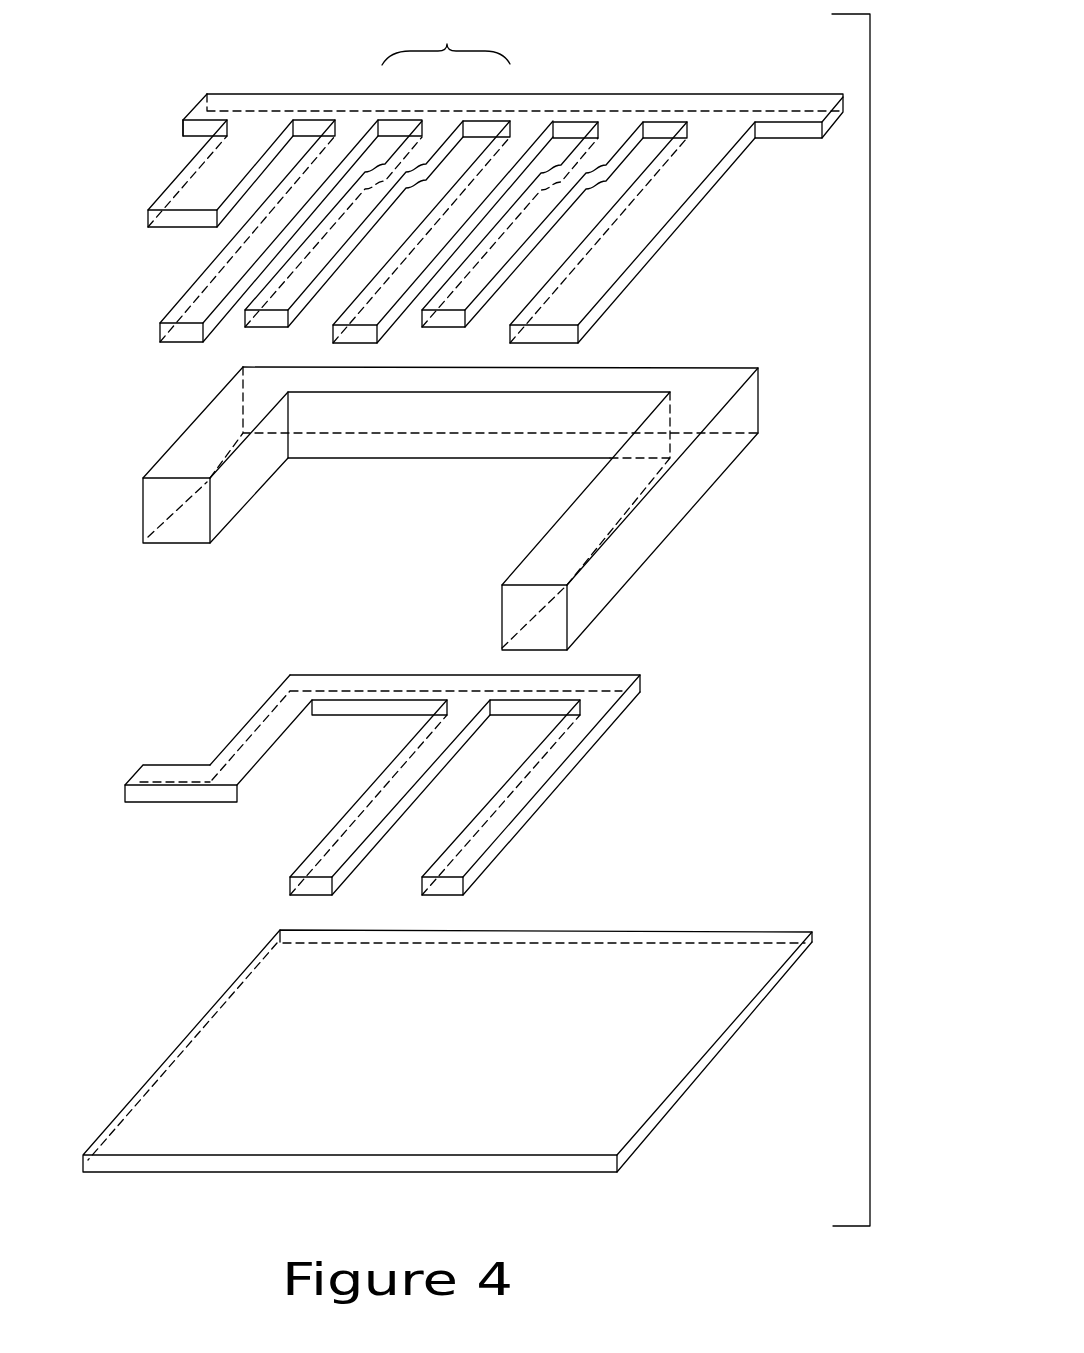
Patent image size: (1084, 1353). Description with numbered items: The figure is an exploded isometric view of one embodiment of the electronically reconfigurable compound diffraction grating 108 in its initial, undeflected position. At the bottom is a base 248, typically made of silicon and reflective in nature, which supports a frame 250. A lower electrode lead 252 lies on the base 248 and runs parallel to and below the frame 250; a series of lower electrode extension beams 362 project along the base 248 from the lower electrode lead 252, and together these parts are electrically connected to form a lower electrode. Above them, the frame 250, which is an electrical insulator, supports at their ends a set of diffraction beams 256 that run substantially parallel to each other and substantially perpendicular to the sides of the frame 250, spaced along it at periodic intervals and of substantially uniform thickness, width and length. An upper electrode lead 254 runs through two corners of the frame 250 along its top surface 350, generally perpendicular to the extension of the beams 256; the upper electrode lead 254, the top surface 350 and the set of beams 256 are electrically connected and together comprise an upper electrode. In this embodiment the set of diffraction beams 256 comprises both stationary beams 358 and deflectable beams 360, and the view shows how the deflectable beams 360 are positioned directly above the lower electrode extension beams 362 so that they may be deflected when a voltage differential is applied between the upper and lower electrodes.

The reconfigurable compound diffraction grating 108 is at (870, 672).
The base 248 is at (617, 1128).
The frame 250 is at (673, 498).
The lower electrode lead 252 is at (382, 802).
The upper electrode lead 254 is at (451, 202).
The set of diffraction beams 256 is at (446, 41).
The top surface 350 is at (180, 218).
The stationary beams 358 is at (353, 123).
The deflectable beams 360 is at (440, 122).
The lower electrode extension beams 362 is at (308, 888).